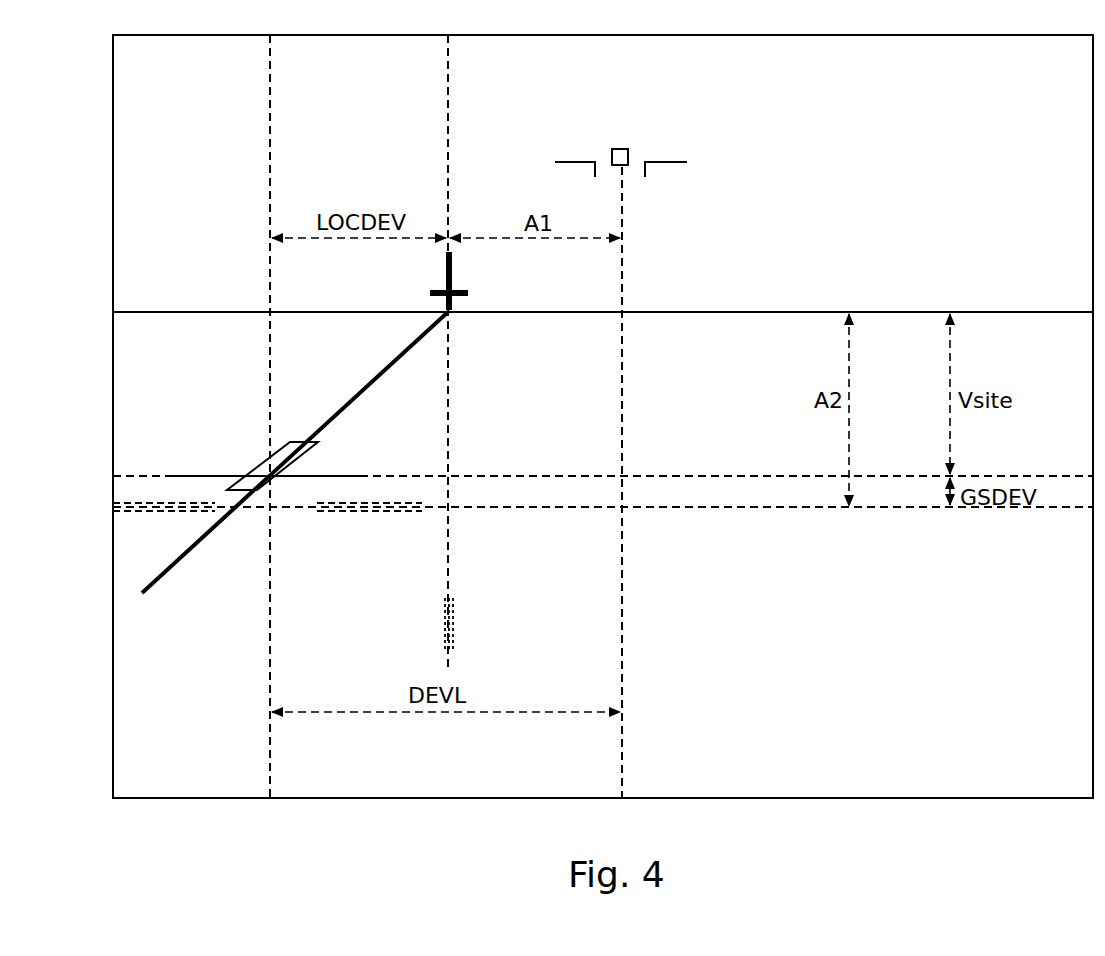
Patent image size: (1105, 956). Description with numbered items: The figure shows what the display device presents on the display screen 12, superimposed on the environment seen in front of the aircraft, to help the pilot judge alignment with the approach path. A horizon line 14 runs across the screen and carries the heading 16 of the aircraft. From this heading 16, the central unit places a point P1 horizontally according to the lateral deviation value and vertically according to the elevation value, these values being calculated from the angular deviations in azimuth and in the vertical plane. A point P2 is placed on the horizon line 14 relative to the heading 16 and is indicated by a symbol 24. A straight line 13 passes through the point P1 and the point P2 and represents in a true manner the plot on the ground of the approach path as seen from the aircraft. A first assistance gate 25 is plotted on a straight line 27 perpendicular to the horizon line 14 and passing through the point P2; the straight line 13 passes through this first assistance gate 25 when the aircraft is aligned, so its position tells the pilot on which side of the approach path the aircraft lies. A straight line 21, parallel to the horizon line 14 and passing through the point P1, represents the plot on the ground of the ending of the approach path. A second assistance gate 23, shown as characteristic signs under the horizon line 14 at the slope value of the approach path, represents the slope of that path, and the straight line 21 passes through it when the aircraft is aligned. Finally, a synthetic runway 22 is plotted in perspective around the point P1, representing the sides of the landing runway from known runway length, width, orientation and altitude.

The display screen 12 is at (852, 799).
The straight line 13 is at (384, 376).
The horizon line 14 is at (774, 308).
The heading 16 is at (632, 307).
The straight line 21 is at (212, 474).
The synthetic runway 22 is at (292, 441).
The second assistance gate 23 is at (165, 500).
The symbol 24 is at (426, 274).
The first assistance gate 25 is at (460, 616).
The straight line 27 is at (449, 97).
The point P1 is at (280, 490).
The point P2 is at (456, 322).